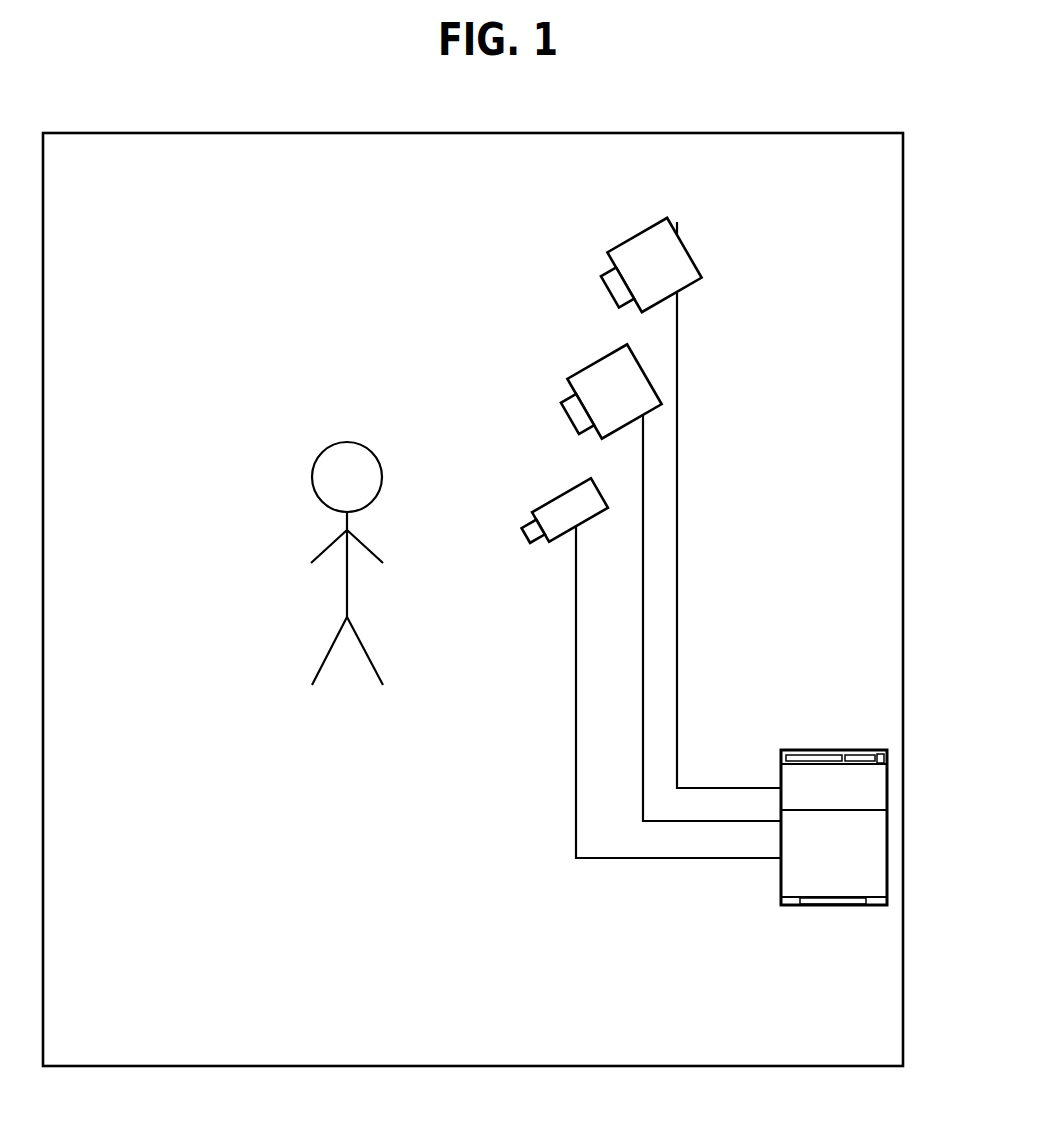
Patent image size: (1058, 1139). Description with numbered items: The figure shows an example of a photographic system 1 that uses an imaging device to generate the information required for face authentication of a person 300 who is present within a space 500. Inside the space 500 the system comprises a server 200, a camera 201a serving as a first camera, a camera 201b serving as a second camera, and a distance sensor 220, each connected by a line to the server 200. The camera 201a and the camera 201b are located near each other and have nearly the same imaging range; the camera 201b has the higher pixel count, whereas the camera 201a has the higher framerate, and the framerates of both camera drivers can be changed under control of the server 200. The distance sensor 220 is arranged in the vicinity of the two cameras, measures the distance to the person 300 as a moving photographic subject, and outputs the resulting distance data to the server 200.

The photographic system 1 is at (763, 262).
The server 200 is at (818, 750).
The camera 201a is at (653, 226).
The camera 201b is at (615, 350).
The distance sensor 220 is at (575, 482).
The person 300 is at (352, 442).
The space 500 is at (903, 258).